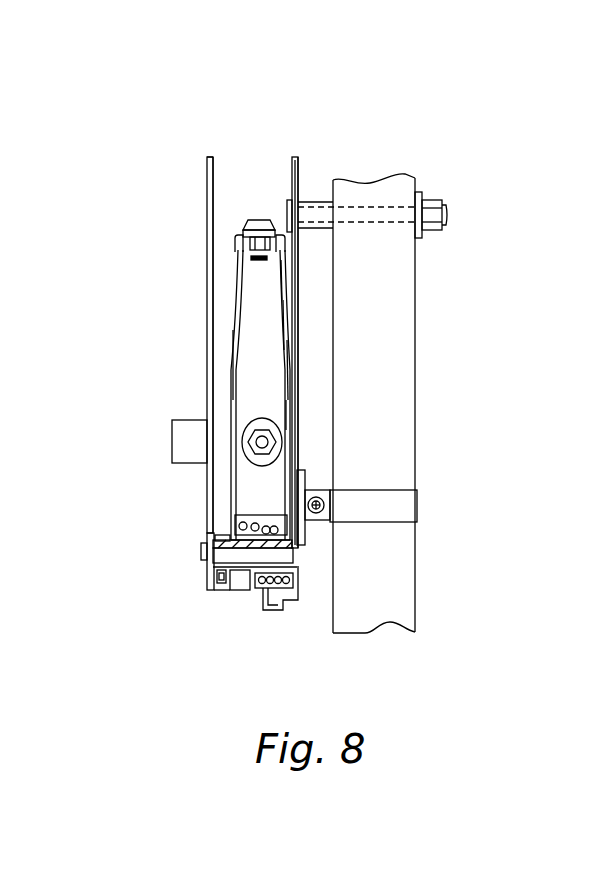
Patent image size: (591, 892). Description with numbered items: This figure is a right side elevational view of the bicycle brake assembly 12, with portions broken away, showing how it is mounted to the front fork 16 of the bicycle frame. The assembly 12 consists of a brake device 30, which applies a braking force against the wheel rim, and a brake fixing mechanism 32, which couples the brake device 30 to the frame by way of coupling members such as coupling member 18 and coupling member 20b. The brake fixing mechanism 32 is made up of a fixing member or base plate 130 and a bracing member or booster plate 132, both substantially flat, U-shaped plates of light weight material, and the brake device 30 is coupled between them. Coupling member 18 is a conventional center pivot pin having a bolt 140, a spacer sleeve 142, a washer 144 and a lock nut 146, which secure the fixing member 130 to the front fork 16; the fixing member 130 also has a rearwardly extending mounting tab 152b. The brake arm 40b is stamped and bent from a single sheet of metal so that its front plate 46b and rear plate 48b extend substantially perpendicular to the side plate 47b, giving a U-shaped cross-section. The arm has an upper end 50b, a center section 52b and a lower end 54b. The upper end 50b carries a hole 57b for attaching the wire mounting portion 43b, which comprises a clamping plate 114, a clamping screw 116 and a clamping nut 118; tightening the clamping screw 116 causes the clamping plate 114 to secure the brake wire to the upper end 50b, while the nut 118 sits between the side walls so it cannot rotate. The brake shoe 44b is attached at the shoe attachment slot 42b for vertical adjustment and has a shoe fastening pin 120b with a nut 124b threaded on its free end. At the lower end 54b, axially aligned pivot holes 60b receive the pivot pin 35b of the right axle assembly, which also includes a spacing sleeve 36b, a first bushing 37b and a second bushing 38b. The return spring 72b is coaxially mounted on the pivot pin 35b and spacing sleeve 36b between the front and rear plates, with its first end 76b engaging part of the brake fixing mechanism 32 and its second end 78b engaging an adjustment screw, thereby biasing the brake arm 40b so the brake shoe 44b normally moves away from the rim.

The bicycle brake assembly 12 is at (145, 225).
The front fork 16 is at (415, 310).
The coupling member 18 is at (283, 190).
The coupling member 20b is at (418, 503).
The brake device 30 is at (232, 333).
The brake fixing mechanism 32 is at (200, 169).
The pivot pin 35b is at (200, 547).
The spacing sleeve 36b is at (205, 572).
The first bushing 37b is at (222, 583).
The second bushing 38b is at (300, 578).
The brake arm 40b is at (290, 367).
The shoe attachment portion or slot 42b is at (273, 463).
The wire mounting portion 43b is at (298, 245).
The brake shoe 44b is at (172, 452).
The front wall or plate 46b is at (233, 375).
The side wall or plate 47b is at (241, 404).
The rear wall or plate 48b is at (278, 330).
The upper end 50b is at (268, 270).
The center section 52b is at (277, 415).
The lower end 54b is at (275, 503).
The hole 57b is at (250, 237).
The pivot holes 60b is at (203, 560).
The torsion or return spring 72b is at (242, 525).
The first end 76b is at (280, 600).
The second end 78b is at (240, 528).
The clamping plate 114 is at (240, 233).
The clamping screw 116 is at (275, 223).
The clamping nut 118 is at (250, 255).
The shoe fastening pin 120b is at (265, 440).
The nut 124b is at (270, 447).
The fixing member or base plate 130 is at (302, 311).
The bracing member or booster plate 132 is at (210, 249).
The bolt 140 is at (287, 200).
The spacer sleeve 142 is at (330, 233).
The washer 144 is at (422, 235).
The lock nut 146 is at (440, 192).
The mounting tab 152b is at (305, 480).